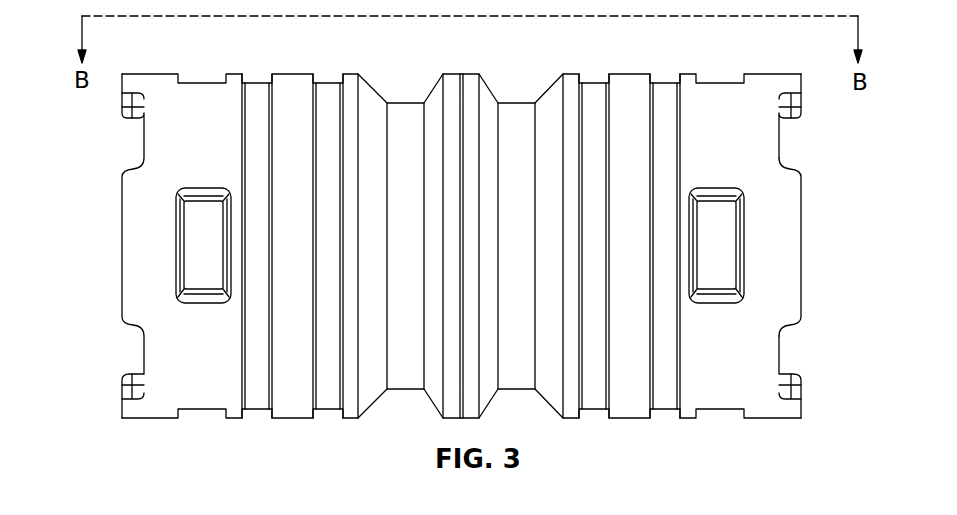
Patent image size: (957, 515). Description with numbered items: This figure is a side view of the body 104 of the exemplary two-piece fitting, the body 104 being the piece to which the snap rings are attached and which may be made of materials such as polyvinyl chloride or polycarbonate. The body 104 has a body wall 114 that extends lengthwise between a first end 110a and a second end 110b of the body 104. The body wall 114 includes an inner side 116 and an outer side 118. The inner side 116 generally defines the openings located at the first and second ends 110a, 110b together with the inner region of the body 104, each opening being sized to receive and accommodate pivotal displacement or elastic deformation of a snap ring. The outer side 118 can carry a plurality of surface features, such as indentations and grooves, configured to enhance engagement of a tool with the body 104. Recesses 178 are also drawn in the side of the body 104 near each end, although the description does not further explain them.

The body 104 is at (750, 448).
The first end 110a is at (118, 288).
The second end 110b is at (800, 297).
The body wall 114 is at (750, 163).
The inner side 116 is at (779, 334).
The outer side 118 is at (780, 198).
The recess 178 is at (208, 242).